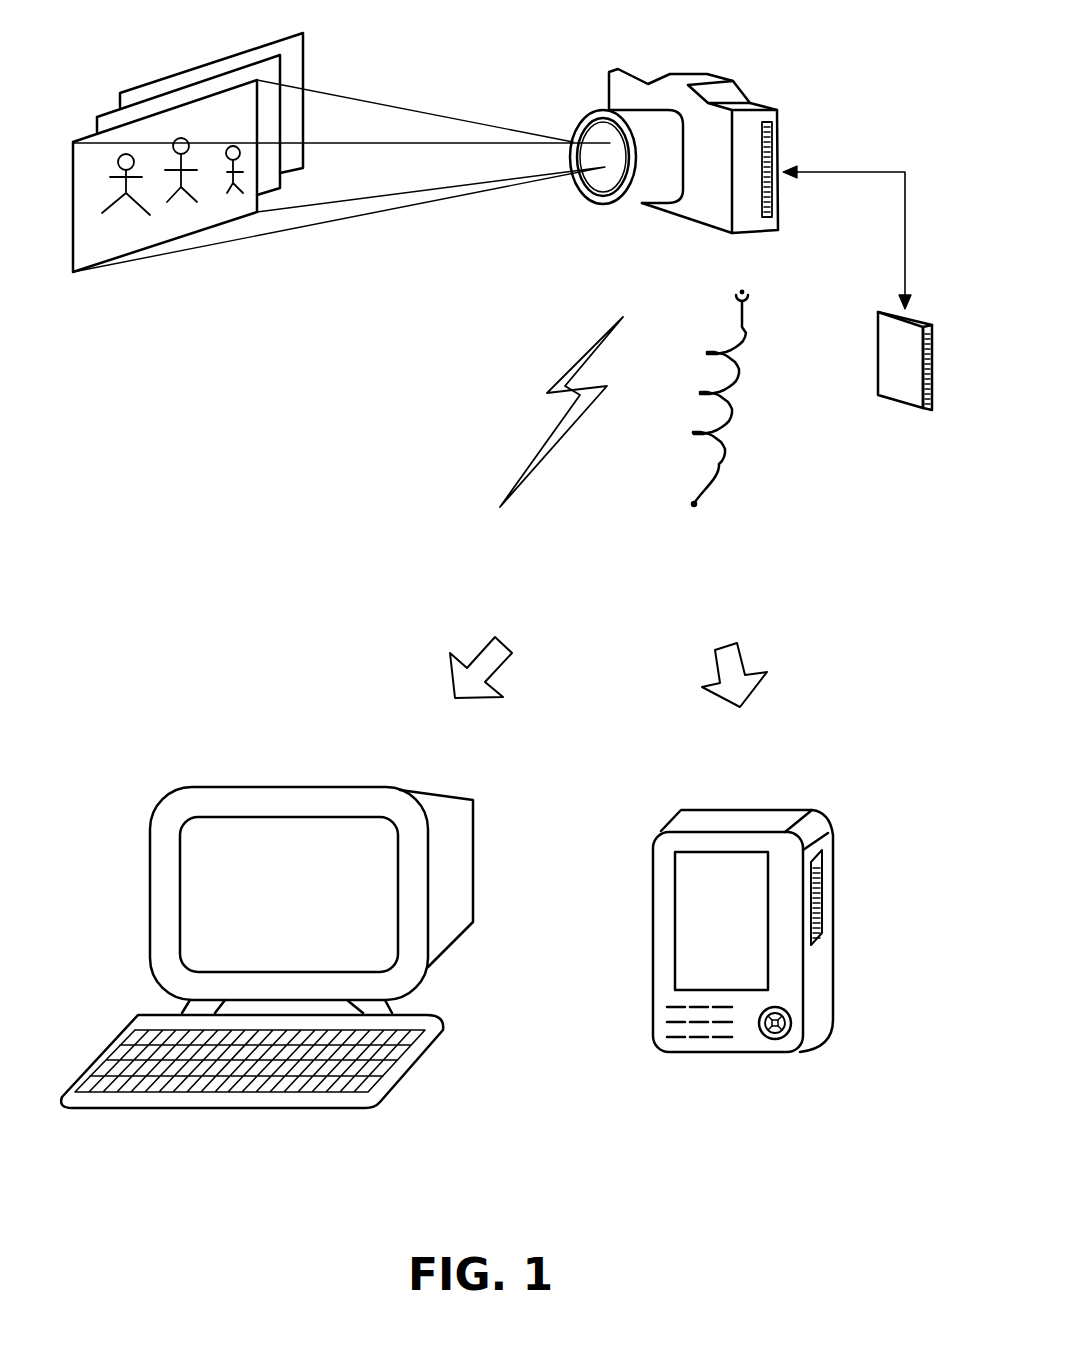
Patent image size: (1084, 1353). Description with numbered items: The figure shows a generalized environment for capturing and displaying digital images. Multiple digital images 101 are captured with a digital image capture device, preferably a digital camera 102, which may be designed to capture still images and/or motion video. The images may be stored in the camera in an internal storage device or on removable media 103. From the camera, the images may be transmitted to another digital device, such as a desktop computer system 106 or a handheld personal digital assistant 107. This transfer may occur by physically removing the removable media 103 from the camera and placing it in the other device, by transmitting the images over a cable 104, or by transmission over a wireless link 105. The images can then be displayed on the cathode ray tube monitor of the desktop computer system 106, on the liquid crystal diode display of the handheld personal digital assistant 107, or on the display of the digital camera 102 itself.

The digital images 101 is at (322, 45).
The digital camera 102 is at (703, 70).
The removable media 103 is at (897, 405).
The cable 104 is at (727, 457).
The wireless link 105 is at (560, 377).
The desktop computer system 106 is at (320, 787).
The handheld personal digital assistant 107 is at (773, 810).